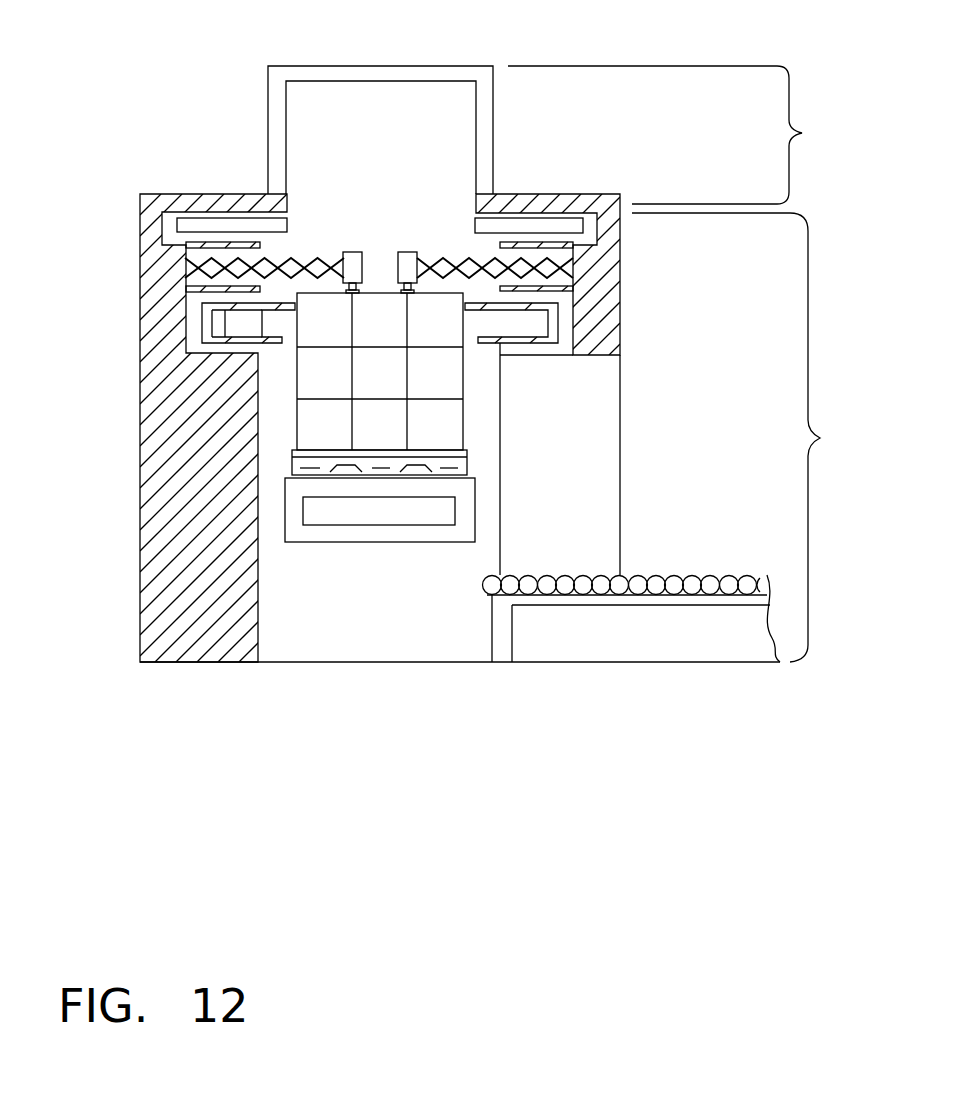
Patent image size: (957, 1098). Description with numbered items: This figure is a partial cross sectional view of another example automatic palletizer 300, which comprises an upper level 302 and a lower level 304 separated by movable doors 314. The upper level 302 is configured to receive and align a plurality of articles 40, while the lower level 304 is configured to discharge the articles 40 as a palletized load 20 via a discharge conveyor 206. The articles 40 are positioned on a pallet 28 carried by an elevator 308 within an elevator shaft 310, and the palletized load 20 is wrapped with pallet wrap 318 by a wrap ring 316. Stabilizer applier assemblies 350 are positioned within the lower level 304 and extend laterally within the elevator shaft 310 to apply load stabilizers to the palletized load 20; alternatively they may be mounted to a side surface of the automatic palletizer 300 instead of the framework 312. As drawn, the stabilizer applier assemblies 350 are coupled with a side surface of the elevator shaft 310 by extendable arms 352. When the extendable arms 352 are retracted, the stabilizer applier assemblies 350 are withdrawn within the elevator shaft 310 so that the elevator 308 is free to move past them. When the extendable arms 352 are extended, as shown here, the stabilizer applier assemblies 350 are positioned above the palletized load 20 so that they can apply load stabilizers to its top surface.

The automatic palletizer 300 is at (165, 88).
The upper level 302 is at (802, 133).
The lower level 304 is at (820, 438).
The elevator shaft 310 is at (365, 632).
The framework 312 is at (368, 66).
The movable doors 314 is at (203, 227).
The wrap ring 316 is at (207, 317).
The pallet wrap 318 is at (240, 323).
The stabilizer applier assemblies 350 is at (410, 252).
The extendable arms 352 is at (458, 260).
The articles 40 is at (440, 370).
The pallet 28 is at (470, 469).
The elevator 308 is at (476, 538).
The palletized load 20 is at (270, 452).
The discharge conveyor 206 is at (662, 575).